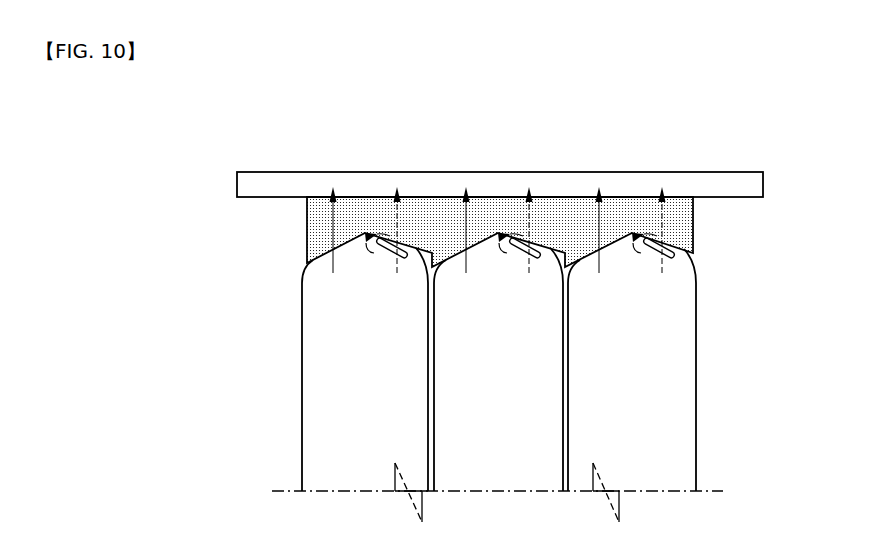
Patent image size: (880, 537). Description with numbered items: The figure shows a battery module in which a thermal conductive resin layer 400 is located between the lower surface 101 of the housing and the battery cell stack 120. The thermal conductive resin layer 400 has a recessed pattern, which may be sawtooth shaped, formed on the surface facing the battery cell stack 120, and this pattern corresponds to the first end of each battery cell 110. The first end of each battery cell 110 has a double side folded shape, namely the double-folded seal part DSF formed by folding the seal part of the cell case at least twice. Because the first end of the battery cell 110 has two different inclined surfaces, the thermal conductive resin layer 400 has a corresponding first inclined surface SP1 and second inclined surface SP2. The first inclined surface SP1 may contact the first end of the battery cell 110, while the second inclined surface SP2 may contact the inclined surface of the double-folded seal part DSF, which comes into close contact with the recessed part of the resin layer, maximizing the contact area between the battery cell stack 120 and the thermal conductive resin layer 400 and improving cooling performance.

The lower surface of the housing 101 is at (277, 182).
The thermal conductive resin layer 400 is at (565, 220).
The battery cell stack 120 is at (473, 369).
The battery cell 110 is at (682, 385).
The double-folded seal part DSF is at (514, 238).
The first inclined surface SP1 is at (330, 230).
The second inclined surface SP2 is at (397, 230).